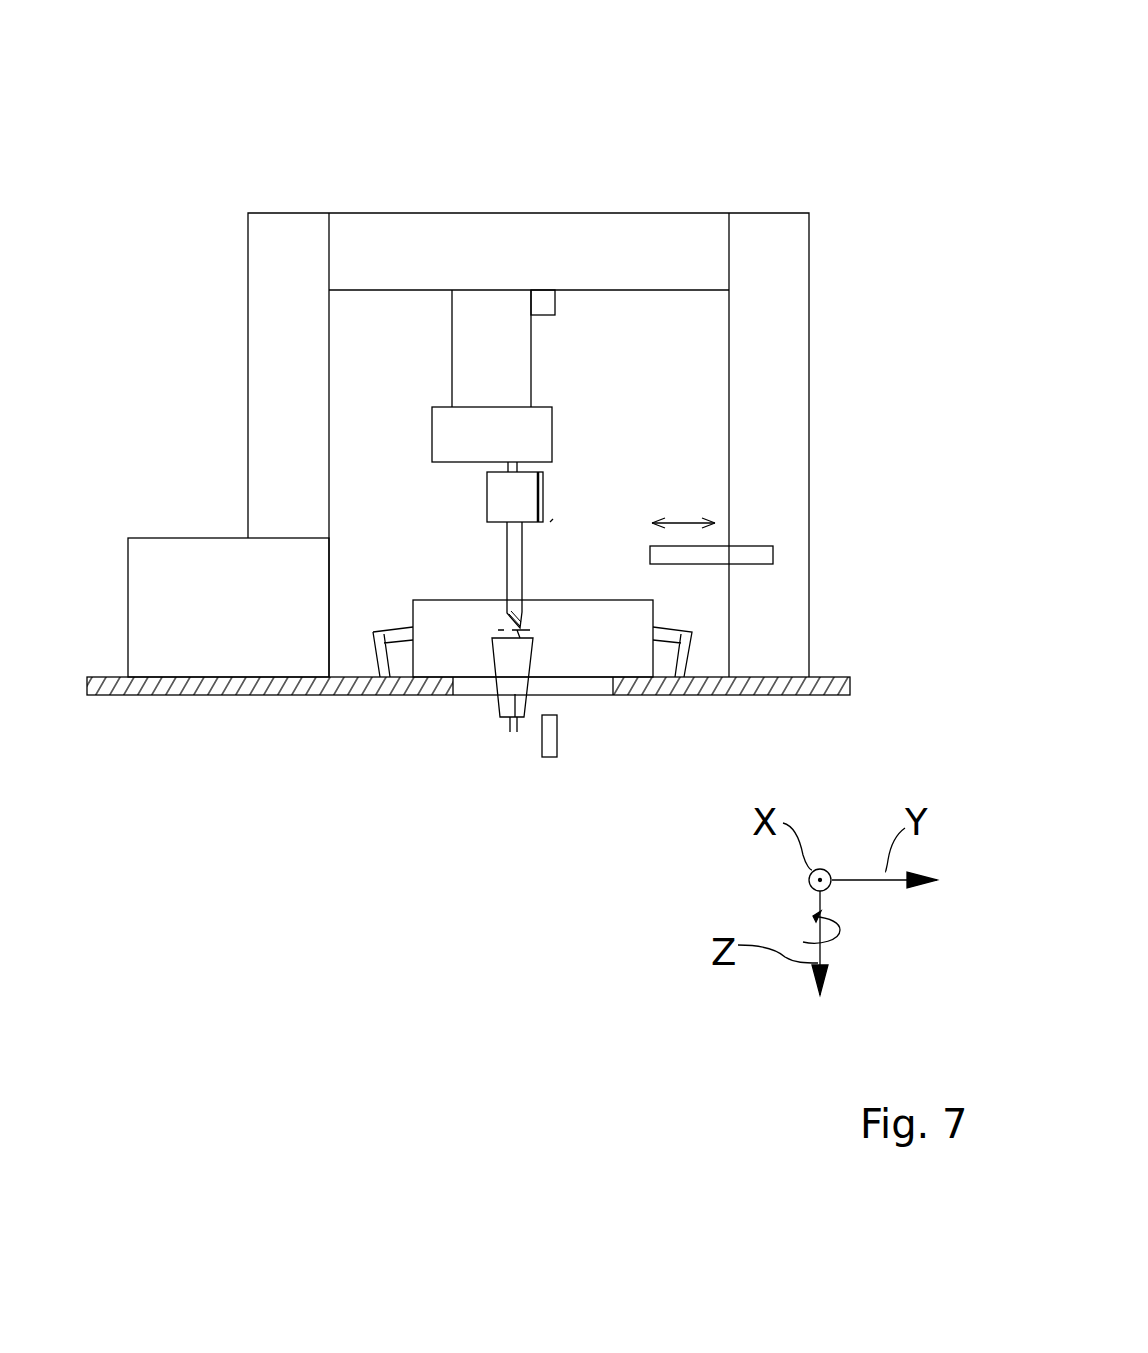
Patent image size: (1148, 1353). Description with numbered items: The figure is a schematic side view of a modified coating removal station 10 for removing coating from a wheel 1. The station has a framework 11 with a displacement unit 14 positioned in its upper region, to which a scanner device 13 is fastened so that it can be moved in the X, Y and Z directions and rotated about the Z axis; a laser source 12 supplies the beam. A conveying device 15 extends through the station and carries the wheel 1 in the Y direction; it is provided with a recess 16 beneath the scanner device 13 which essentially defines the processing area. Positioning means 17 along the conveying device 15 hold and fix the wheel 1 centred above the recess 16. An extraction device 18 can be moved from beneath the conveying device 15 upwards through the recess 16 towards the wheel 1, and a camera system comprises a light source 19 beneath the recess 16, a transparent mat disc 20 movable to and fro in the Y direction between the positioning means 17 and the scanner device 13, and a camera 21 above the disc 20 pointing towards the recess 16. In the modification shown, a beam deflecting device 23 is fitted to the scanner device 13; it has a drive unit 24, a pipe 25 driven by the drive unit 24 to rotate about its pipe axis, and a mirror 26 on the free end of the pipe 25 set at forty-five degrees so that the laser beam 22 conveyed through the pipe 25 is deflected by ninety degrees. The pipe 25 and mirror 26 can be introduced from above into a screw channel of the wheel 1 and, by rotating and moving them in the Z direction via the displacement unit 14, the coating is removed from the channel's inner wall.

The wheel 1 is at (573, 632).
The coating removal station 10 is at (758, 135).
The framework 11 is at (787, 305).
The laser source 12 is at (175, 552).
The scanner device 13 is at (453, 425).
The displacement unit 14 is at (356, 233).
The conveying device 15 is at (247, 685).
The recess 16 is at (477, 683).
The positioning means 17 is at (398, 625).
The extraction device 18 is at (516, 732).
The light source 19 is at (550, 738).
The disc 20 is at (747, 552).
The camera 21 is at (540, 302).
The laser beam 22 is at (507, 471).
The beam deflecting device 23 is at (550, 523).
The drive unit 24 is at (487, 500).
The pipe 25 is at (507, 565).
The mirror 26 is at (505, 627).